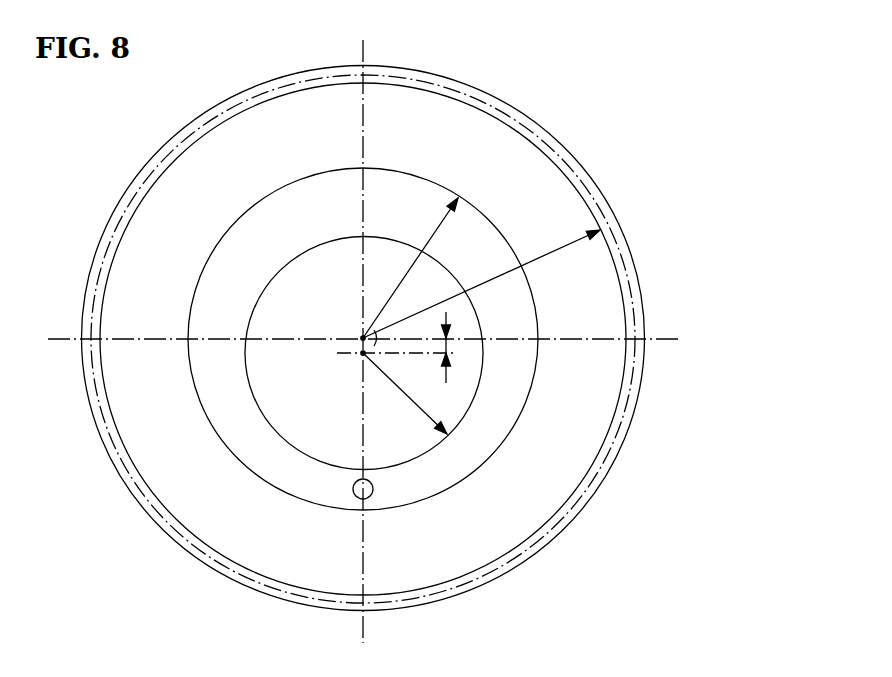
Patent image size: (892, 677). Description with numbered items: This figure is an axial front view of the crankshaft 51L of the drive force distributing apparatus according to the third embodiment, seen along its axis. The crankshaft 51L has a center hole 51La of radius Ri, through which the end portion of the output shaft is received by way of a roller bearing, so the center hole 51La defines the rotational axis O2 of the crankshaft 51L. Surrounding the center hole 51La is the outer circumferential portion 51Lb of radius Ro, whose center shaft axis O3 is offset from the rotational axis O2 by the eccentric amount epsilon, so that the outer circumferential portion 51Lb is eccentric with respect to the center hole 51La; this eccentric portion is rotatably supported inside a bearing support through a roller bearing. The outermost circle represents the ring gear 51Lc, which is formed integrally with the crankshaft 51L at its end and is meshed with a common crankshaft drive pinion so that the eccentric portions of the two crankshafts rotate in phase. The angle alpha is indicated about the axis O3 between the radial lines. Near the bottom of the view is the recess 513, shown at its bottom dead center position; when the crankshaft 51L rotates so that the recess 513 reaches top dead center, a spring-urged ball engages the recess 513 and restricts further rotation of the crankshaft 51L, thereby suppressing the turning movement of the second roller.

The crankshaft 51L is at (555, 130).
The center hole 51La is at (455, 283).
The outer circumferential portion 51Lb is at (422, 177).
The ring gear 51Lc is at (590, 502).
The recess 513 is at (372, 492).
The radius of outer circumferential portion Ro is at (386, 303).
The radius of center hole Ri is at (397, 390).
The center shaft axis O3 is at (358, 333).
The center axis O2 is at (359, 355).
The angle α alpha is at (354, 349).
The eccentric amount epsilon is at (447, 345).